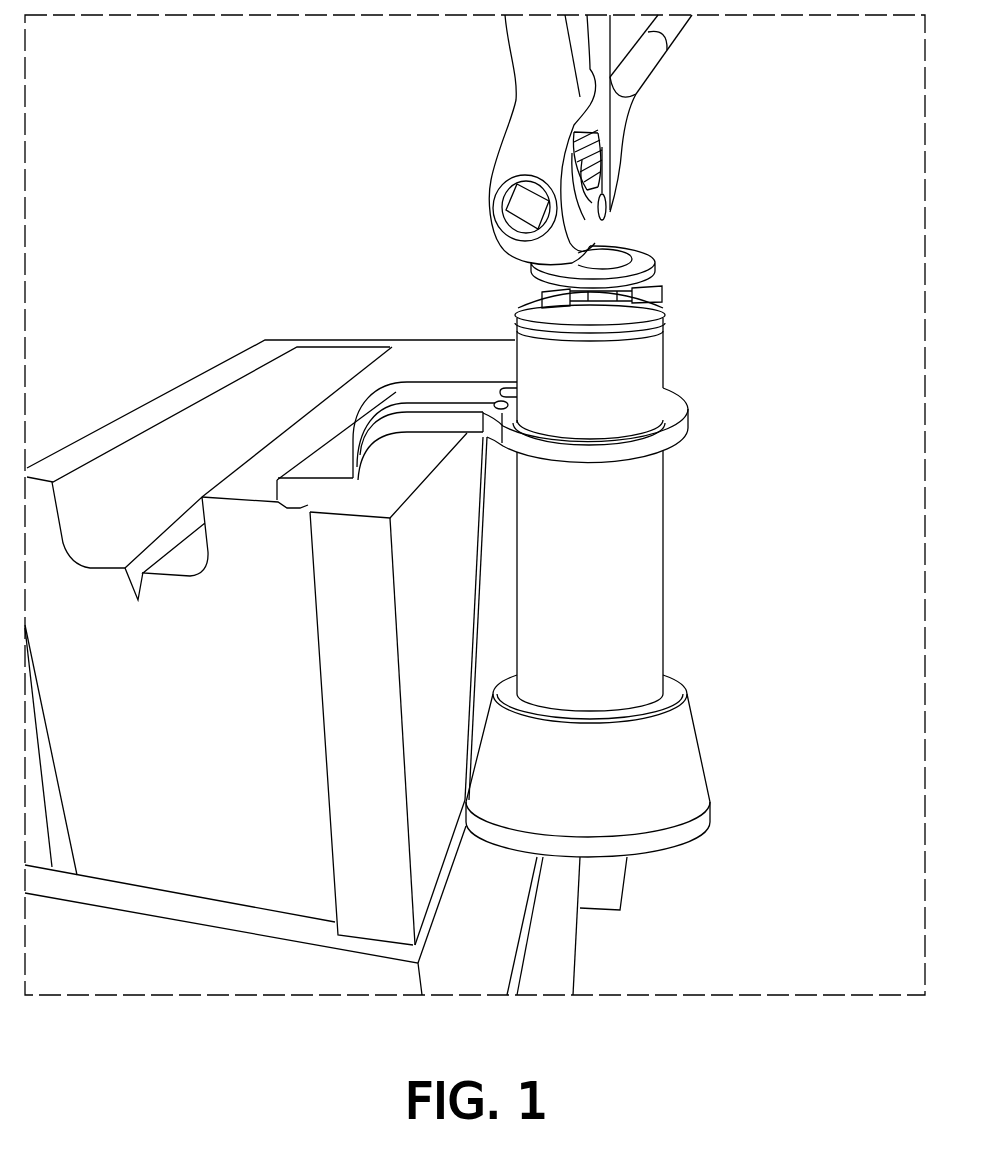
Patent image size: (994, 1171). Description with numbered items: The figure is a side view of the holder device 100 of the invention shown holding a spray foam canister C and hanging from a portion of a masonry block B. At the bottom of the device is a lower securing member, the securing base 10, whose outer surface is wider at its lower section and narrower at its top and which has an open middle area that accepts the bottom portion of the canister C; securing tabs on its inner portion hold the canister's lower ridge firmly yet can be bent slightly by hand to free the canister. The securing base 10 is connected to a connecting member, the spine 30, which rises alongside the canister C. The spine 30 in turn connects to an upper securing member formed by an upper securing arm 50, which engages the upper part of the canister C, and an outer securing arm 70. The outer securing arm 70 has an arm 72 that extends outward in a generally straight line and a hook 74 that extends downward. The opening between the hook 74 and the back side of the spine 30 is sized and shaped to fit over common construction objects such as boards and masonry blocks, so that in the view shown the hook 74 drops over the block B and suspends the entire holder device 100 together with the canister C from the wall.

The holder device 100 is at (504, 625).
The securing base 10 is at (685, 788).
The spine 30 is at (490, 622).
The upper securing arm 50 is at (662, 443).
The outer securing arm 70 is at (356, 367).
The arm 72 is at (437, 392).
The hook 74 is at (380, 425).
The masonry block B is at (100, 623).
The canister C is at (642, 620).